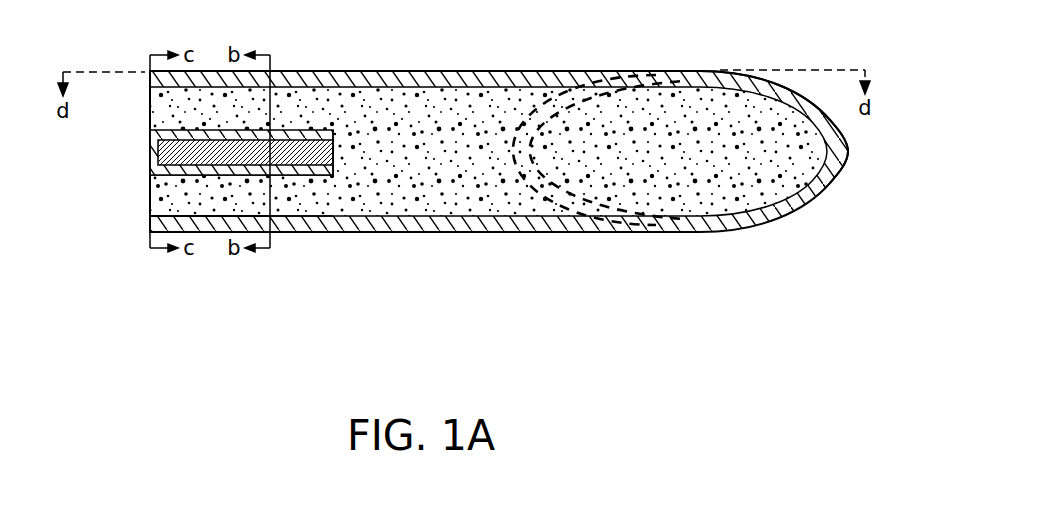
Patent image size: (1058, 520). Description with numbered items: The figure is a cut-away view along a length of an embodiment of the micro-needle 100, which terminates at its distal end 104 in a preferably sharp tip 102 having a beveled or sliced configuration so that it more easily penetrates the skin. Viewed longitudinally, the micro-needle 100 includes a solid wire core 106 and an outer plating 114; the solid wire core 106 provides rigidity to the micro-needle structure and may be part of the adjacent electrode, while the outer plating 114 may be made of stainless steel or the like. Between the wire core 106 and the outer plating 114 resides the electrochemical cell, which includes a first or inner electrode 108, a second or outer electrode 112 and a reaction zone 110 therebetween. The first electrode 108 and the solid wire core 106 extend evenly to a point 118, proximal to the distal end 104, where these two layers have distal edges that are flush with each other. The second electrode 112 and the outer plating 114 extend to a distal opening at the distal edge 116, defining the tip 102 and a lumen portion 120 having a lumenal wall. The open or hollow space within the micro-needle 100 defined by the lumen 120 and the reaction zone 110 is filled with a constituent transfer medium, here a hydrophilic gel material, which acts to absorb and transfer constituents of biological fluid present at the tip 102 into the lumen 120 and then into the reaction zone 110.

The micro-needle 100 is at (597, 258).
The tip 102 is at (803, 205).
The distal end 104 is at (682, 68).
The solid wire core 106 is at (333, 150).
The first or inner electrode 108 is at (290, 138).
The reaction zone 110 is at (173, 195).
The second or outer electrode 112 is at (213, 228).
The outer plating 114 is at (324, 232).
The edge 116 is at (840, 152).
The point 118 is at (333, 130).
The lumen portion 120 is at (430, 115).